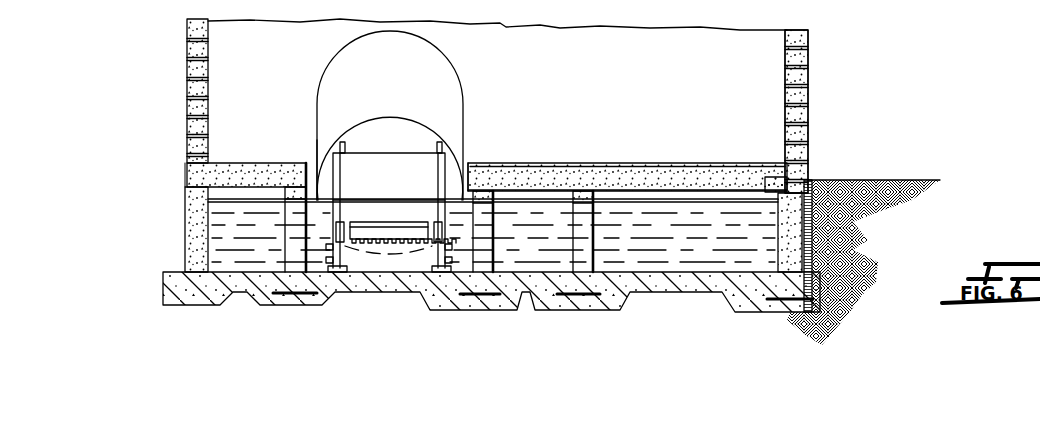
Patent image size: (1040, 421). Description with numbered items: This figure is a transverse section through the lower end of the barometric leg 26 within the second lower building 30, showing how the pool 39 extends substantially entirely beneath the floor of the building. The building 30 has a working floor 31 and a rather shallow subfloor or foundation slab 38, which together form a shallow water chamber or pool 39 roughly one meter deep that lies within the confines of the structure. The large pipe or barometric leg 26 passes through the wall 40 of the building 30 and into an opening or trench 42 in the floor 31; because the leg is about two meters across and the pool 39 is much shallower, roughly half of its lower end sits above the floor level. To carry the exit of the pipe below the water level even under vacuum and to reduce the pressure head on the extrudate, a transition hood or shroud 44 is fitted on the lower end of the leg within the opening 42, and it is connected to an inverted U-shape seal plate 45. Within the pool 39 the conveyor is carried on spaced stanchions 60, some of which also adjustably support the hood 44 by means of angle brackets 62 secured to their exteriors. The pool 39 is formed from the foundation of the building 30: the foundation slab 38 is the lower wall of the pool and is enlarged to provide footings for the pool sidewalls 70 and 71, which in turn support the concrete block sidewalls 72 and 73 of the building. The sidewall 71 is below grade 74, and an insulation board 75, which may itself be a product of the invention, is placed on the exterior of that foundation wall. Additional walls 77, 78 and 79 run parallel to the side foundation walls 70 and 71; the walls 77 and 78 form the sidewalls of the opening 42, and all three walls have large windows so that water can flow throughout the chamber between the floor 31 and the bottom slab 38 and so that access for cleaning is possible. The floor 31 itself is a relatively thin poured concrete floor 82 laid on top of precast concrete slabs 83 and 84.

The barometric leg 26 is at (449, 68).
The second lower building 30 is at (809, 70).
The working floor 31 is at (638, 163).
The foundation slab 38 is at (677, 290).
The pool 39 is at (691, 217).
The wall 40 is at (489, 35).
The trench 42 is at (476, 162).
The transition hood 44 is at (318, 146).
The inverted U-shape seal plate 45 is at (374, 129).
The stanchions 60 is at (341, 263).
The angle brackets 62 is at (448, 257).
The pool sidewall 70 is at (187, 227).
The pool sidewall 71 is at (787, 201).
The building sidewall 72 is at (186, 70).
The building sidewall 73 is at (809, 98).
The grade 74 is at (887, 180).
The insulation board 75 is at (831, 219).
The wall 77 is at (285, 217).
The wall 78 is at (496, 225).
The wall 79 is at (591, 232).
The poured concrete floor 82 is at (548, 162).
The precast concrete slab 83 is at (601, 180).
The precast concrete slab 84 is at (237, 172).